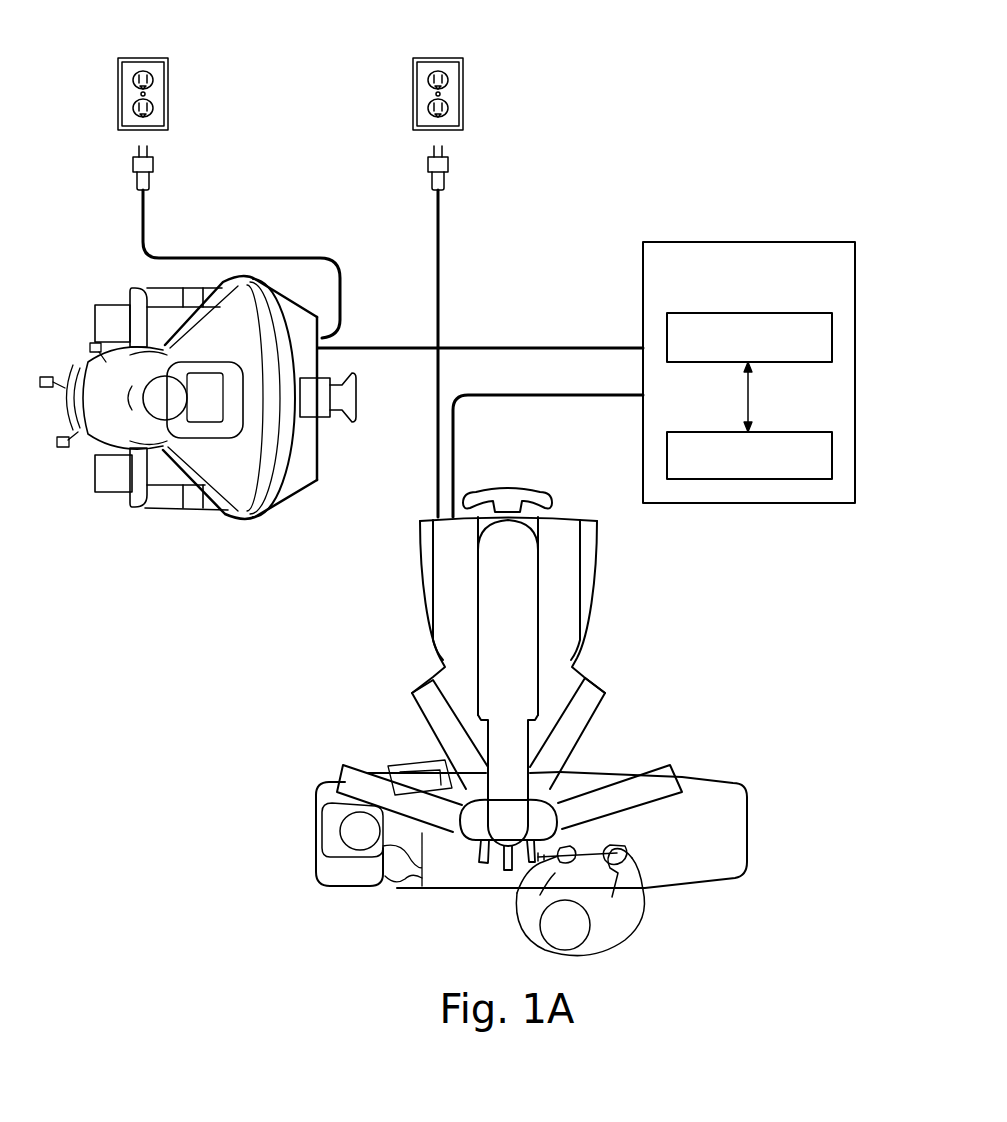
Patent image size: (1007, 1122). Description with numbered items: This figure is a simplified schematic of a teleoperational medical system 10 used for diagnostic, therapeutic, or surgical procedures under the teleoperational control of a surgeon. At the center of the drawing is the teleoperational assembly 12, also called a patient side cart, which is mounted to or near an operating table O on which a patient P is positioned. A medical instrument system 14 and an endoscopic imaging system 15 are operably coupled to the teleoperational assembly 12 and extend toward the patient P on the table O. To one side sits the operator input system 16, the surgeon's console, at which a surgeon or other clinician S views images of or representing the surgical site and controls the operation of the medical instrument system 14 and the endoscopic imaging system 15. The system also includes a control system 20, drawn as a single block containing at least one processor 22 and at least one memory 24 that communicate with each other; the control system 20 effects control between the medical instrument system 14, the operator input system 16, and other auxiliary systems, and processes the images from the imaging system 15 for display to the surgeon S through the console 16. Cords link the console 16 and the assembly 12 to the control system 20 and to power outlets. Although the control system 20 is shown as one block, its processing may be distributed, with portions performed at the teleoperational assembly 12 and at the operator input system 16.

The teleoperational medical system 10 is at (652, 91).
The teleoperational assembly 12 is at (490, 648).
The medical instrument system 14 is at (573, 840).
The endoscopic imaging system 15 is at (492, 867).
The operator input system 16 is at (295, 498).
The control system 20 is at (749, 338).
The processor 22 is at (762, 312).
The memory 24 is at (772, 431).
The surgeon S is at (85, 367).
The patient P is at (342, 858).
The operating table O is at (682, 886).